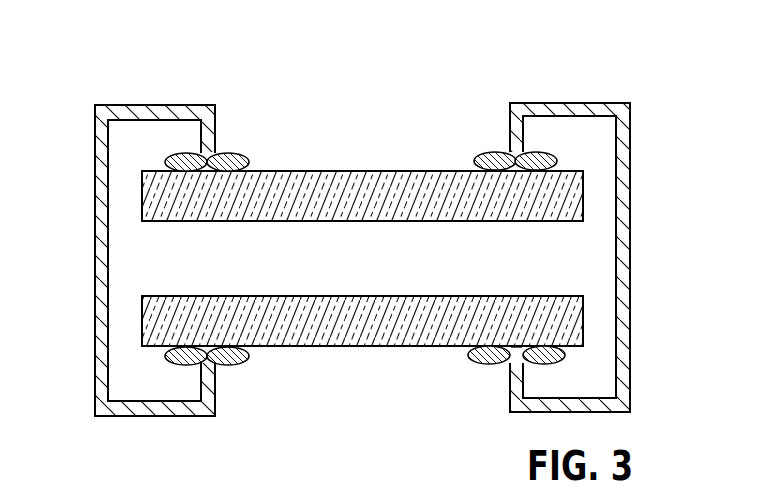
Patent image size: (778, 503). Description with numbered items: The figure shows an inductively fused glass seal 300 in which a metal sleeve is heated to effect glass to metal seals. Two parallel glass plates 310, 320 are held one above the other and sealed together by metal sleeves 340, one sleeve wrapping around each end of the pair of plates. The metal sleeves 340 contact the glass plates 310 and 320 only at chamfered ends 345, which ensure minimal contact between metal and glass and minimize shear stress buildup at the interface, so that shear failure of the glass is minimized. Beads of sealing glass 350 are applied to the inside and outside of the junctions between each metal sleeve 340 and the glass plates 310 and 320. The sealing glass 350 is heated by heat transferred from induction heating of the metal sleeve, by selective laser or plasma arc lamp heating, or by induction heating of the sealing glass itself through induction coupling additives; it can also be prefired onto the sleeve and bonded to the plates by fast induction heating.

The semiconductor package assembly 300 is at (653, 99).
The glass plate 310 is at (142, 197).
The glass plate 320 is at (142, 322).
The metal sleeve 340 is at (95, 105).
The chamfered end 345 is at (514, 347).
The sealing glass 350 is at (535, 153).